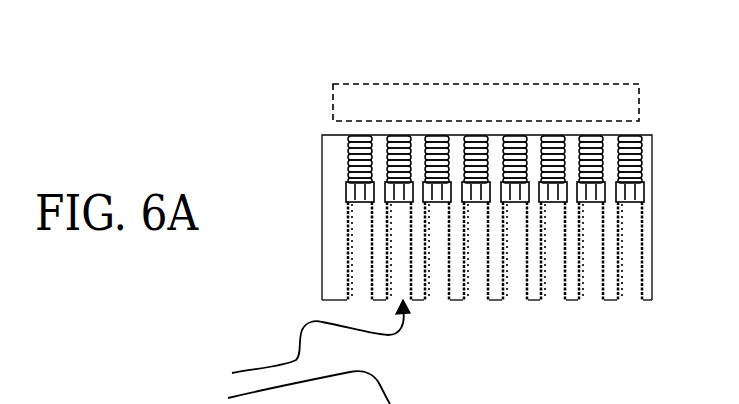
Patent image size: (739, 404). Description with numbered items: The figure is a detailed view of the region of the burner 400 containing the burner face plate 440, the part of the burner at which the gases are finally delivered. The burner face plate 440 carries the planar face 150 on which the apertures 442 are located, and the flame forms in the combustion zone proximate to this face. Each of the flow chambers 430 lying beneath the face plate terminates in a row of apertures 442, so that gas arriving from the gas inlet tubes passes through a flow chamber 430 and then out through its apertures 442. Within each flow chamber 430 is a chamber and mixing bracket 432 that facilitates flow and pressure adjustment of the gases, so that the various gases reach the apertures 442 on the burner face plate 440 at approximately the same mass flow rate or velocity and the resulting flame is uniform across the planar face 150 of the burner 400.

The burner 400 is at (514, 27).
The planar face 150 is at (365, 90).
The burner face plate 440 is at (333, 135).
The apertures 442 is at (437, 135).
The flow chambers 430 is at (290, 352).
The chamber and mixing bracket 432 is at (600, 395).